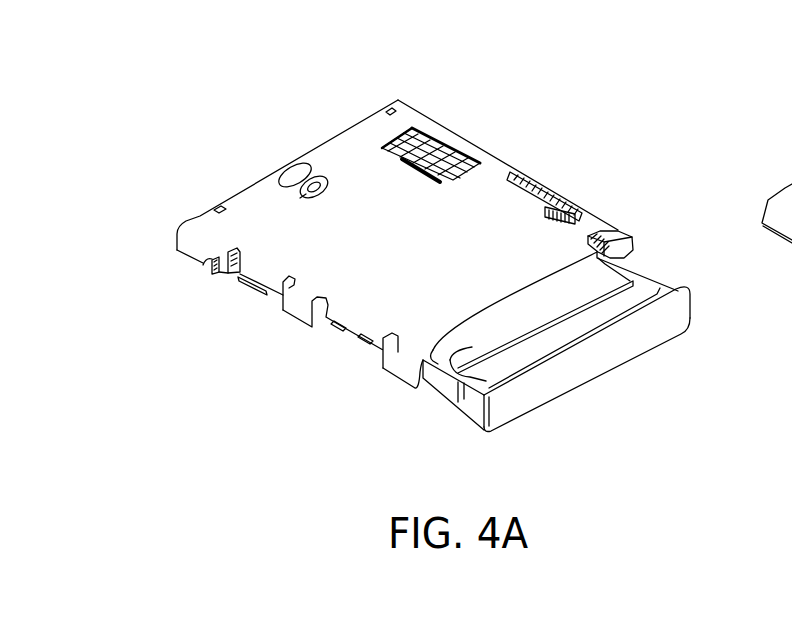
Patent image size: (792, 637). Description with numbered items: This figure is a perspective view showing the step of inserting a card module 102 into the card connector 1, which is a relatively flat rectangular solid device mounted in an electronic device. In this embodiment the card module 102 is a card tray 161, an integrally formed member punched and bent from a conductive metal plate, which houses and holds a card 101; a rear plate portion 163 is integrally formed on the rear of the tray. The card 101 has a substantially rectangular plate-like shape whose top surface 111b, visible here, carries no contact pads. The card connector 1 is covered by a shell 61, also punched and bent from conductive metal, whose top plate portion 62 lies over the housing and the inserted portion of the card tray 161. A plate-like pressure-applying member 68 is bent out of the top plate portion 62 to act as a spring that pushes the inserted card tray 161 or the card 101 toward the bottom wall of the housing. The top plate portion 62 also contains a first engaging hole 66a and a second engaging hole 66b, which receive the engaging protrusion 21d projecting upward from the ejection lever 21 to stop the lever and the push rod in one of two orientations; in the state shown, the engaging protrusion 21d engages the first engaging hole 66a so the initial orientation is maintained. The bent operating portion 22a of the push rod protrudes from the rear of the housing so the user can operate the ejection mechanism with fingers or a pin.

The card connector 1 is at (430, 108).
The shell 61 is at (398, 100).
The first engaging hole 66a is at (318, 178).
The second engaging hole 66b is at (289, 164).
The engaging protrusion 21d is at (303, 195).
The pressure-applying member 68 is at (455, 160).
The top plate portion 62 is at (480, 192).
The operating portion 22a is at (640, 240).
The card 101 is at (597, 285).
The top surface 111b is at (455, 405).
The card module 102 is at (706, 307).
The card tray 161 is at (660, 342).
The rear plate portion 163 is at (592, 365).
The ejection lever 21 is at (777, 193).